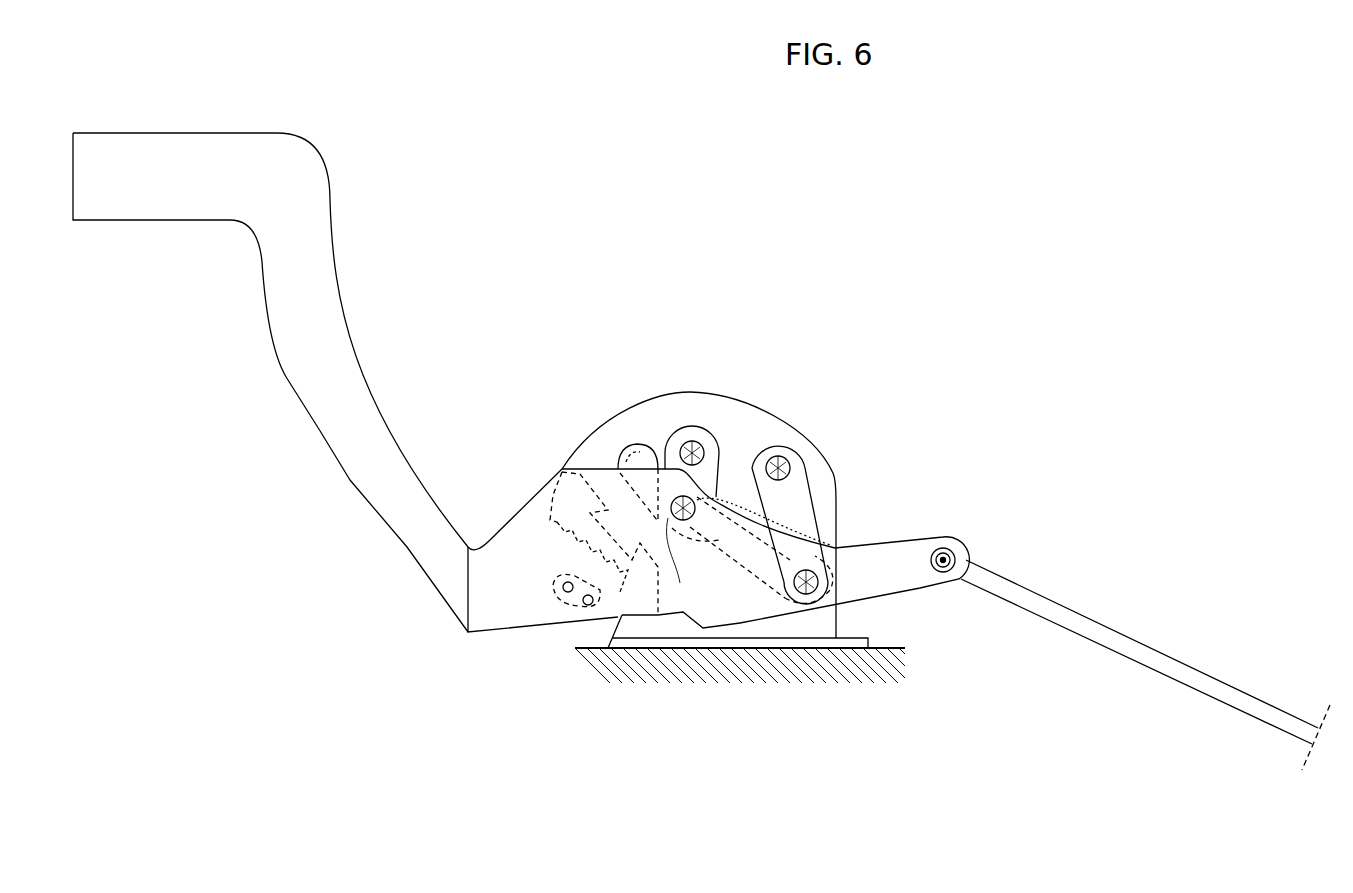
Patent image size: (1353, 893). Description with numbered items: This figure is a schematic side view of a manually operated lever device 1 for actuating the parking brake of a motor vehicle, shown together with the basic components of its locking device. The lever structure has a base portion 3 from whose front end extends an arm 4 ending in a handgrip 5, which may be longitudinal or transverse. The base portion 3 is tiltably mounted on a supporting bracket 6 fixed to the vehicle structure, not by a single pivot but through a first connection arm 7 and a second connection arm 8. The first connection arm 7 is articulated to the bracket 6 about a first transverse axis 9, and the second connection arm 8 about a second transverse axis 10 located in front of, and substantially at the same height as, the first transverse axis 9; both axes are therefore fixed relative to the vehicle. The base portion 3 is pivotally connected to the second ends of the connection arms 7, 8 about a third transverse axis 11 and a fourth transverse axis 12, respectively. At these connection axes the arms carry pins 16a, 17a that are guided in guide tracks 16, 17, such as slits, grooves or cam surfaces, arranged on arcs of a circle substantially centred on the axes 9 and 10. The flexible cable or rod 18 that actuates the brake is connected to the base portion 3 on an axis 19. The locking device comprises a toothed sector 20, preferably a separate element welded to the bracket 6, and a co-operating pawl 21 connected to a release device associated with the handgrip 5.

The lever device 1 is at (522, 258).
The base portion 3 is at (500, 562).
The arm 4 is at (340, 458).
The handgrip 5 is at (295, 172).
The supporting bracket 6 is at (767, 410).
The first connection arm 7 is at (822, 480).
The second connection arm 8 is at (668, 426).
The first transverse axis 9 is at (786, 460).
The second transverse axis 10 is at (714, 437).
The third transverse axis 11 is at (838, 606).
The fourth transverse axis 12 is at (722, 497).
The guide track 16 is at (745, 580).
The pin 16a is at (800, 596).
The guide track 17 is at (632, 455).
The pin 17a is at (691, 565).
The flexible cable or rod 18 is at (1135, 632).
The axis 19 is at (950, 554).
The toothed sector 20 is at (545, 530).
The pawl 21 is at (575, 605).